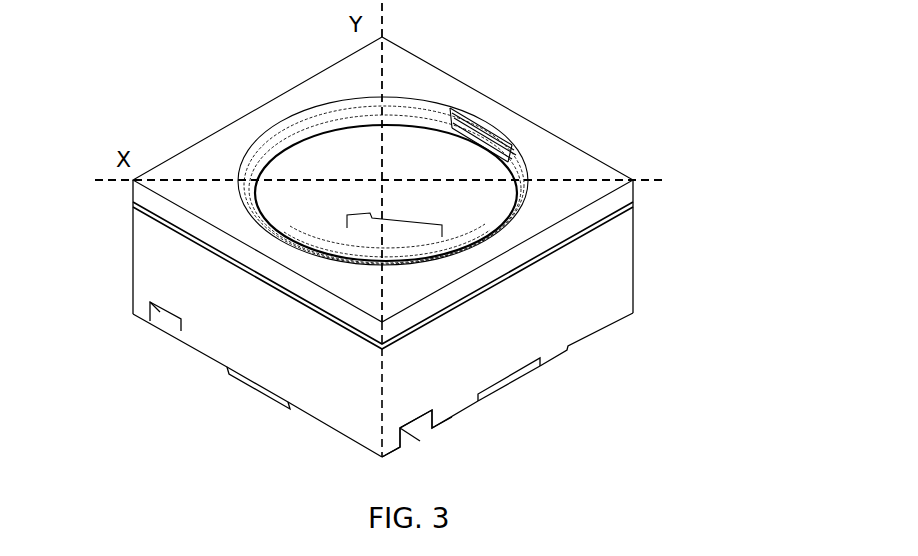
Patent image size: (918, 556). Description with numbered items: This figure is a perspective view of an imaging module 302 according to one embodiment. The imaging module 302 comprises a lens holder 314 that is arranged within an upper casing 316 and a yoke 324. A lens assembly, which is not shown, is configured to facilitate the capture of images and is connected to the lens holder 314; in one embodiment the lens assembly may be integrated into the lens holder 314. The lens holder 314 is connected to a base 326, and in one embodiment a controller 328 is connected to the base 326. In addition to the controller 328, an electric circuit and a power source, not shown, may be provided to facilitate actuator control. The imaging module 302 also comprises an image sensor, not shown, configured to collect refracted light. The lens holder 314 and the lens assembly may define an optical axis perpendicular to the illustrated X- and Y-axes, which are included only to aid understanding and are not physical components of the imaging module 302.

The imaging module 302 is at (401, 241).
The lens holder 314 is at (273, 158).
The upper casing 316 is at (332, 85).
The yoke 324 is at (163, 245).
The base 326 is at (528, 379).
The controller 328 is at (514, 424).